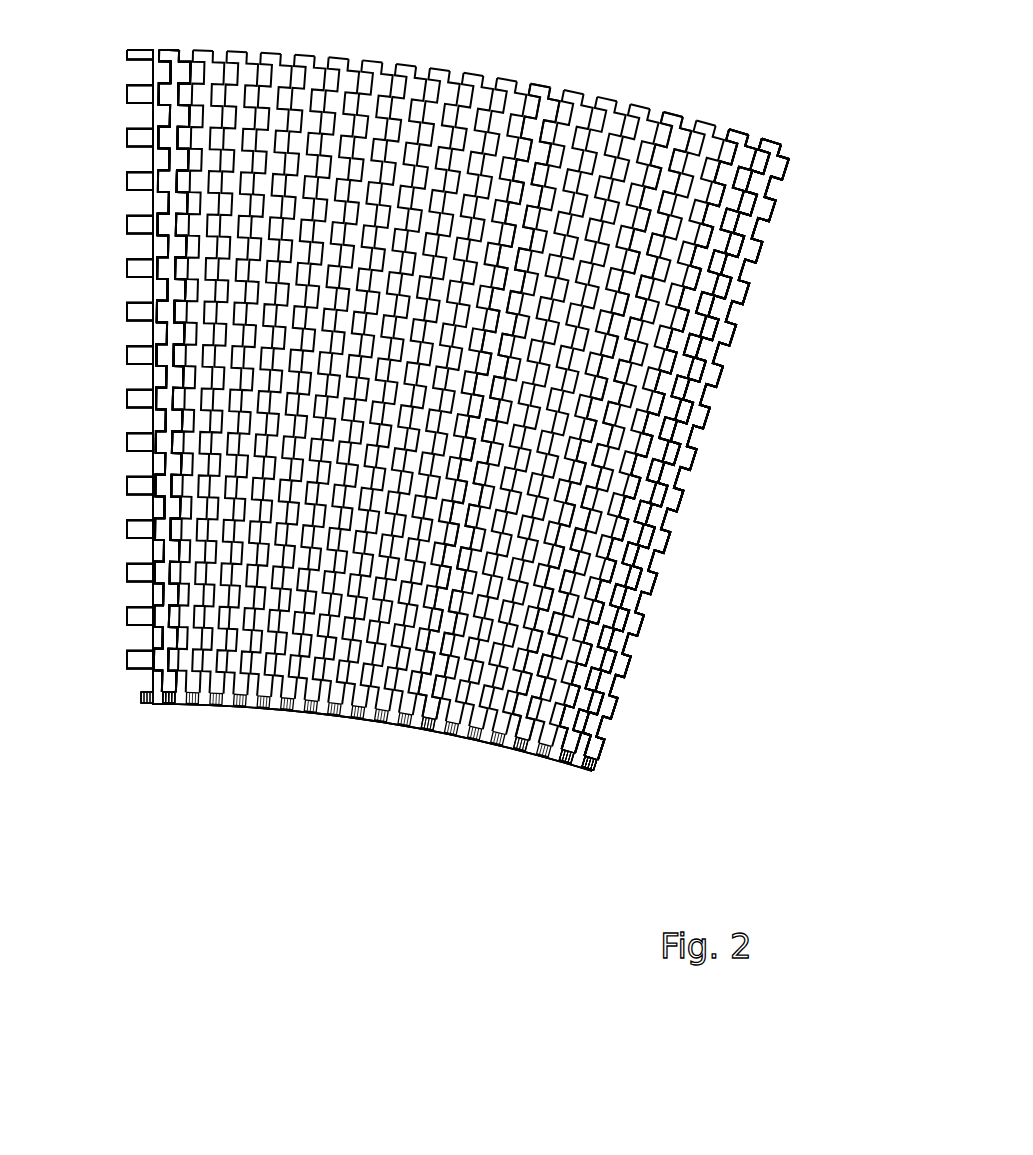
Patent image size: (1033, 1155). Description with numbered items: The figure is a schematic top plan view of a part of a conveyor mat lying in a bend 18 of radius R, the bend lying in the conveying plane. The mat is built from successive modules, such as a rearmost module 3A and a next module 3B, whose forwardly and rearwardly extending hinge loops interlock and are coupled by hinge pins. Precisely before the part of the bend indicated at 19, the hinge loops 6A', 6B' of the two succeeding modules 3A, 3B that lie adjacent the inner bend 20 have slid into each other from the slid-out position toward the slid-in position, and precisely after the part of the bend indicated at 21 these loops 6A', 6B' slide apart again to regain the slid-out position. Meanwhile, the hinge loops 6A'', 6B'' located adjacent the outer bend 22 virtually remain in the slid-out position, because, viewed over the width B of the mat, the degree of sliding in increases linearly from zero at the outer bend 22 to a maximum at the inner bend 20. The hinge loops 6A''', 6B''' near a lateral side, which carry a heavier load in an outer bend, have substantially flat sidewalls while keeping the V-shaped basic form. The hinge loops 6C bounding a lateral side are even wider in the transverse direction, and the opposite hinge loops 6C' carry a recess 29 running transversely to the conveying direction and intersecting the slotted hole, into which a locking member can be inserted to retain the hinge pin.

The bend 18 is at (112, 811).
The part of the bend 19 is at (128, 355).
The inner bend 20 is at (414, 720).
The part of the bend 21 is at (700, 418).
The outer bend 22 is at (545, 85).
The recess 29 is at (598, 752).
The rearmost module 3A is at (140, 655).
The next module 3B is at (170, 657).
The hinge loop 6A' is at (417, 411).
The hinge loop 6B' is at (400, 407).
The opposite hinge loop 6C' is at (680, 455).
The hinge loop 6A'' is at (433, 411).
The hinge loop 6B'' is at (433, 407).
The hinge loop 6A''' is at (705, 455).
The hinge loop 6B''' is at (703, 455).
The hinge loop 6C is at (688, 428).
The radius R is at (378, 731).
The width B is at (695, 794).